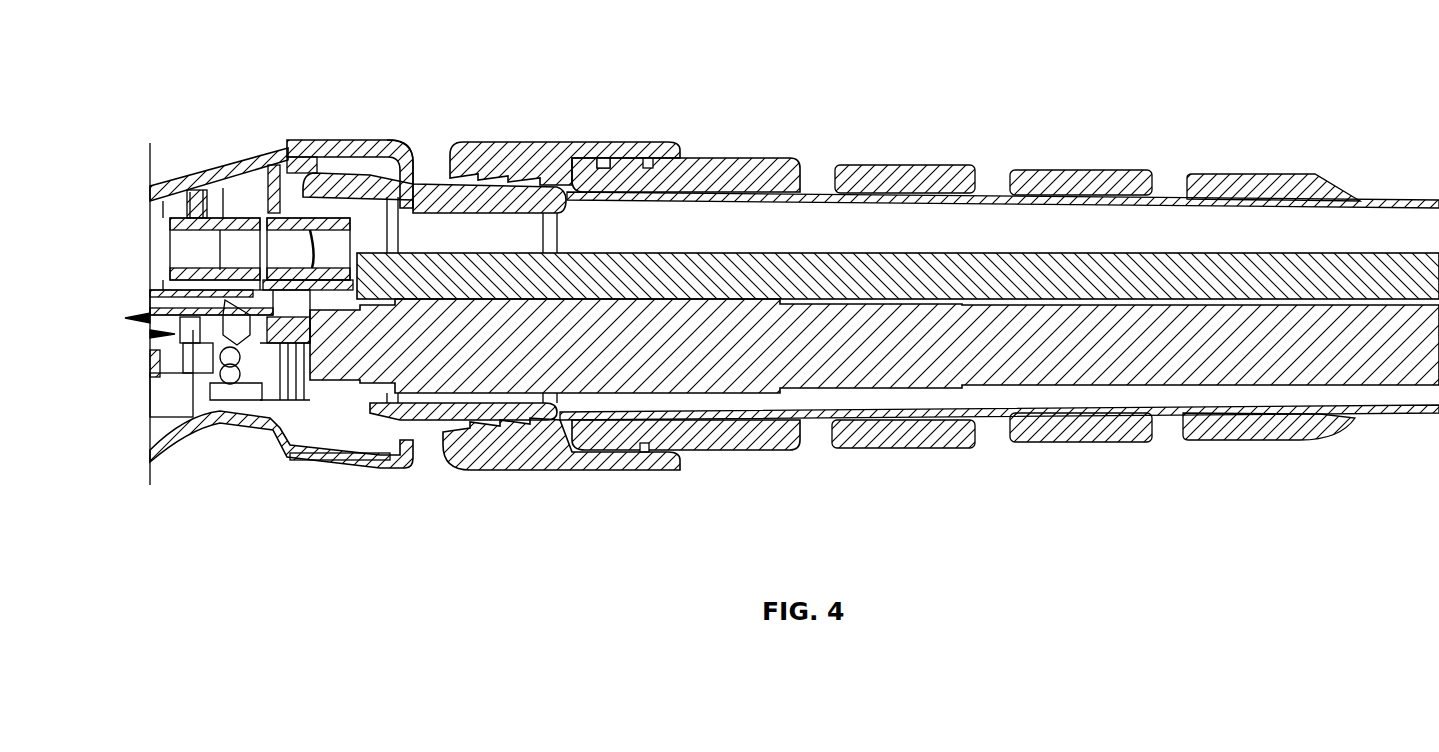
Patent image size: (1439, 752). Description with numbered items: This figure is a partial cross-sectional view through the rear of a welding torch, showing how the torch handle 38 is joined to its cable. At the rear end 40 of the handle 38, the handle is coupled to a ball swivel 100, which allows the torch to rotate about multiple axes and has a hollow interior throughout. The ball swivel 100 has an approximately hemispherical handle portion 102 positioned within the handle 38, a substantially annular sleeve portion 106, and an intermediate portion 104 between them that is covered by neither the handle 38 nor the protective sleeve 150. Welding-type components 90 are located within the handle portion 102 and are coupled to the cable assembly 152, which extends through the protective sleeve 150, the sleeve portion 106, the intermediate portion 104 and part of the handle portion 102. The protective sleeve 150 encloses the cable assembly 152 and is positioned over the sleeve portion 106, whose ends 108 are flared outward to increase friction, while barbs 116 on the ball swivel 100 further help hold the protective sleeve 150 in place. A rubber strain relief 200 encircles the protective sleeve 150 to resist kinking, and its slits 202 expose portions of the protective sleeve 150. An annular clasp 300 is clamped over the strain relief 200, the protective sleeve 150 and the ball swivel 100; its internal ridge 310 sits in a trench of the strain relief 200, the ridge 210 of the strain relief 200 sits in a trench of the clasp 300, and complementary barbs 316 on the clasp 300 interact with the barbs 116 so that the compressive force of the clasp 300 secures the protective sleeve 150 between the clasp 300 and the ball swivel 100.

The handle 38 is at (283, 149).
The rear end 40 is at (392, 138).
The welding-type components 90 is at (221, 305).
The ball swivel 100 is at (333, 178).
The handle portion 102 is at (333, 420).
The intermediate portion 104 is at (425, 408).
The sleeve portion 106 is at (490, 422).
The ends 108 is at (545, 180).
The barbs 116 is at (520, 194).
The protective sleeve 150 is at (1418, 201).
The cable assembly 152 is at (1413, 303).
The strain relief 200 is at (1135, 178).
The slits 202 is at (990, 158).
The annular ridge 210 is at (603, 157).
The annular clasp 300 is at (455, 121).
The annular ridge 310 is at (628, 163).
The complementary barbs 316 is at (472, 178).